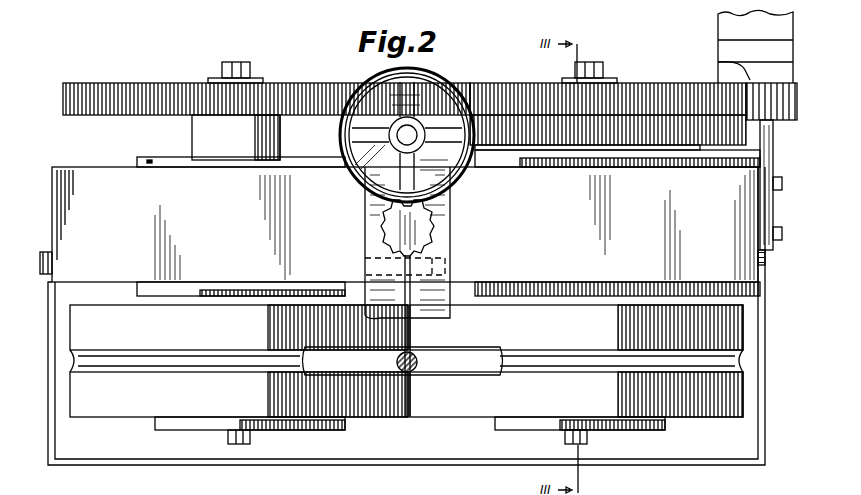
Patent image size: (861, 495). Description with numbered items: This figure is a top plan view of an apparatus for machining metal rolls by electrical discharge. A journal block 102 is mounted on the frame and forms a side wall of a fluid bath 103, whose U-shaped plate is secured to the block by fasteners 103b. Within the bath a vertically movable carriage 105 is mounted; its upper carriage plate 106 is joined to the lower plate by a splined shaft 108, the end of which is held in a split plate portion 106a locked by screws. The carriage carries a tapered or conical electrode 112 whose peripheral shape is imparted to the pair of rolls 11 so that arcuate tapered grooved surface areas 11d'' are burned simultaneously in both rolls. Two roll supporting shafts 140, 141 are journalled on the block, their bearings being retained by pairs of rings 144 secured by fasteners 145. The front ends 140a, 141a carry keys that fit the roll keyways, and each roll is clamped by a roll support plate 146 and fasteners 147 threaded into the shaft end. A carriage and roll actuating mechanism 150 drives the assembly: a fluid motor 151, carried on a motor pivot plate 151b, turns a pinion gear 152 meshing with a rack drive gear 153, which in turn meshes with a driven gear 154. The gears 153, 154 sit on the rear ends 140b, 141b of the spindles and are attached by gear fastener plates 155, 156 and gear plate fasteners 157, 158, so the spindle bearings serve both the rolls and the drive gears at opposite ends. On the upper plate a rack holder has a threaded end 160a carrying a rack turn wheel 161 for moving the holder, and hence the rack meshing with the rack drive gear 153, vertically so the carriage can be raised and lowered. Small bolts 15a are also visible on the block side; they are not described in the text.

The rolls 11 is at (375, 420).
The arcuate tapered grooved surface areas 11d'' is at (406, 398).
The bolts 15a is at (772, 200).
The journal block 102 is at (102, 168).
The fluid bath 103 is at (138, 452).
The fasteners 103b is at (44, 262).
The carriage 105 is at (362, 244).
The upper carriage plate 106 is at (384, 100).
The split plate portion 106a is at (448, 268).
The splined shaft 108 is at (420, 230).
The electrode 112 is at (413, 372).
The roll supporting shaft 140 is at (222, 134).
The front end of shaft 140a is at (266, 298).
The rear end of shaft 140b is at (282, 142).
The roll supporting shaft 141 is at (662, 153).
The front end of shaft 141a is at (528, 300).
The rear end of shaft 141b is at (552, 147).
The rings 144 is at (244, 165).
The fasteners 145 is at (152, 167).
The roll support plate 146 is at (246, 447).
The fasteners 147 is at (285, 435).
The carriage and roll actuating mechanism 150 is at (656, 83).
The fluid motor 151 is at (738, 20).
The motor pivot plate 151b is at (745, 70).
The pinion gear 152 is at (780, 120).
The rack drive gear 153 is at (688, 97).
The driven gear 154 is at (175, 92).
The gear fastener plate 155 is at (604, 80).
The gear fastener plate 156 is at (262, 80).
The gear plate fastener 157 is at (587, 66).
The gear plate fastener 158 is at (236, 66).
The threaded end of rack holder 160a is at (400, 142).
The rack turn wheel 161 is at (440, 80).